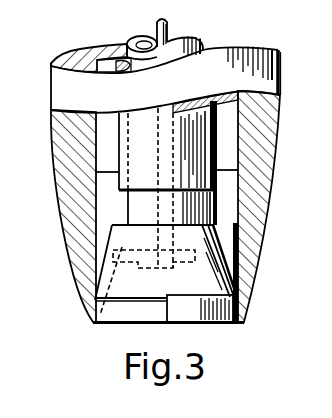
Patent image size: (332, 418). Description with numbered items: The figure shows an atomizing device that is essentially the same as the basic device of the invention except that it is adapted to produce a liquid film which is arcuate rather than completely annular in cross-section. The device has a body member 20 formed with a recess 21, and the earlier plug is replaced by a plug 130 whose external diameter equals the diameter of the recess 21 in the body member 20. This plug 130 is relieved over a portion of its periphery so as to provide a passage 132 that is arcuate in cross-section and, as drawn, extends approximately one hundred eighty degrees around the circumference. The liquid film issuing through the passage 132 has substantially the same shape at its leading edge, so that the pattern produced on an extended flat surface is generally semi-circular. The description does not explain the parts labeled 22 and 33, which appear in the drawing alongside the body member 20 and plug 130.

The body member 20 is at (277, 168).
The recess 21 is at (221, 130).
The cavity 22 is at (120, 136).
The core member 33 is at (128, 199).
The plug 130 is at (105, 258).
The passage 132 is at (240, 323).